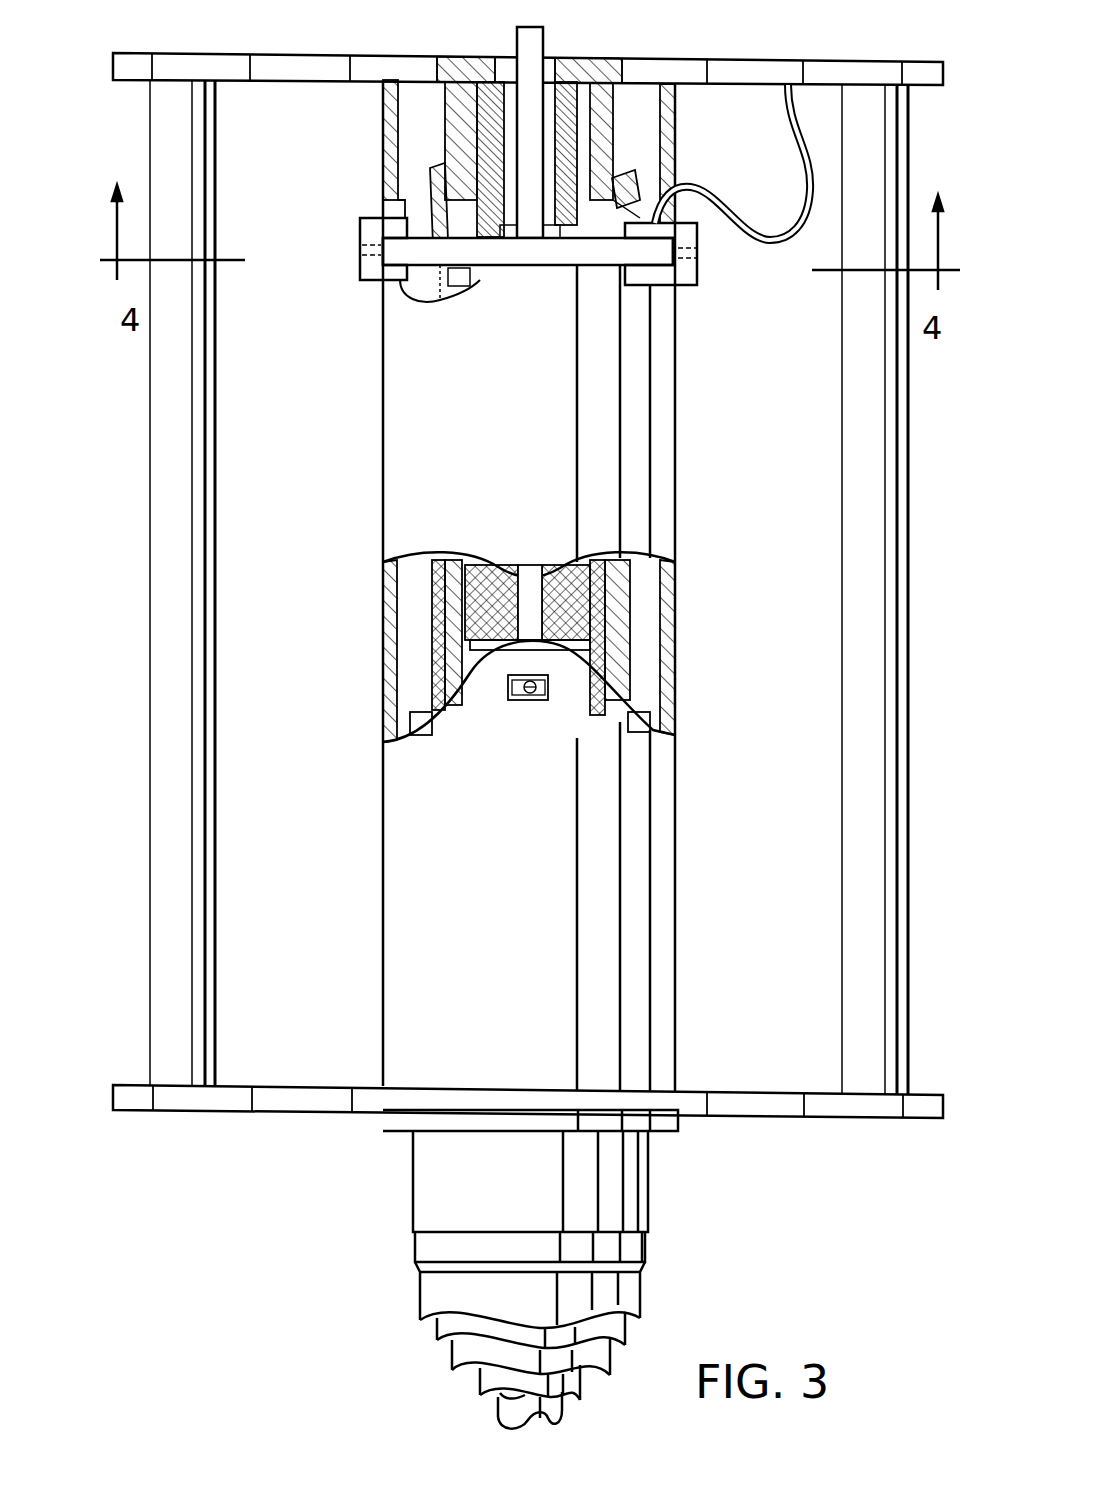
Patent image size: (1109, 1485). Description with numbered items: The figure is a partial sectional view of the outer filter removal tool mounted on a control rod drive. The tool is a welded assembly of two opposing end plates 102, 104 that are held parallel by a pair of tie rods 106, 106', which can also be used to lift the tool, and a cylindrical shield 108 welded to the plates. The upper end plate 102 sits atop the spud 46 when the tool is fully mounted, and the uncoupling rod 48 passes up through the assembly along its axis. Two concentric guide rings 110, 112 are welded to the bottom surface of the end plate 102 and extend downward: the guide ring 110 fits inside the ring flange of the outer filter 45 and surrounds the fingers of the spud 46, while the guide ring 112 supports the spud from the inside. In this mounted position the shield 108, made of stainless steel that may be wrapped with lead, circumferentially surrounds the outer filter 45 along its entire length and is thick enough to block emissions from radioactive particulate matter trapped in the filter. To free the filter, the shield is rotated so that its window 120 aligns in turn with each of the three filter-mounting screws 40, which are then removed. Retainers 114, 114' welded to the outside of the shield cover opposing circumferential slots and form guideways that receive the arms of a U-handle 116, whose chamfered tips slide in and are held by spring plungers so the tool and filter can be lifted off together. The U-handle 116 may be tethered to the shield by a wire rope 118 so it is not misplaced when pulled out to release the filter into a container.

The end plate 102 is at (275, 57).
The end plate 104 is at (752, 1118).
The tie rod 106 is at (234, 583).
The tie rod 106' is at (829, 589).
The rod 48 is at (520, 42).
The guide ring 112 is at (568, 92).
The spud 46 is at (470, 130).
The guide ring 110 is at (605, 120).
The shield 108 is at (383, 150).
The outer filter 45 is at (425, 165).
The wire rope 118 is at (700, 185).
The retainer 114 is at (331, 271).
The retainer 114' is at (717, 280).
The U-handle 116 is at (545, 270).
The filter-mounting screw 40 is at (508, 690).
The window 120 is at (565, 690).